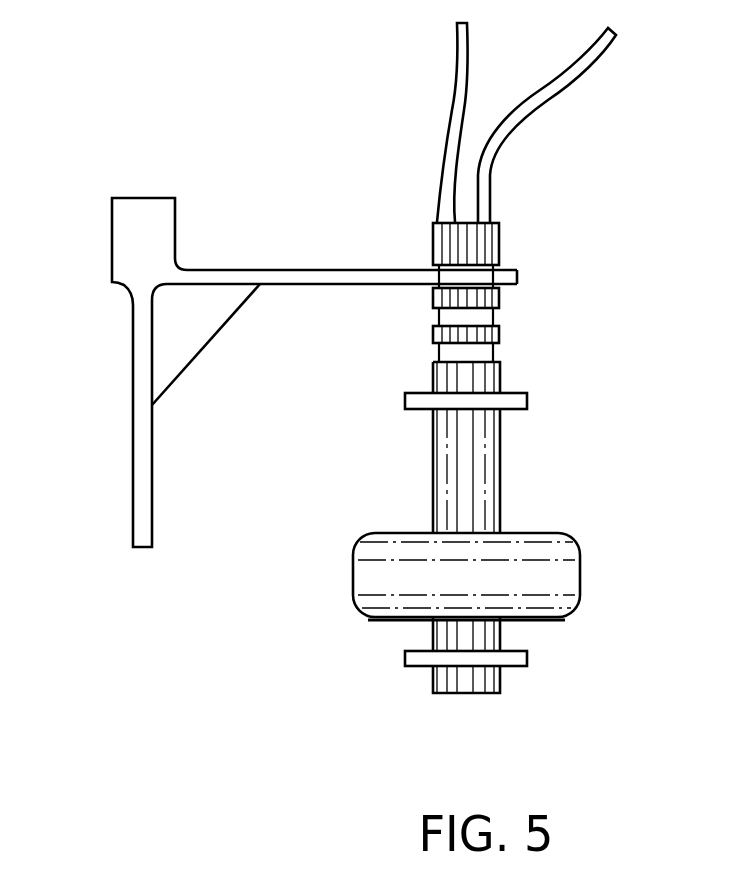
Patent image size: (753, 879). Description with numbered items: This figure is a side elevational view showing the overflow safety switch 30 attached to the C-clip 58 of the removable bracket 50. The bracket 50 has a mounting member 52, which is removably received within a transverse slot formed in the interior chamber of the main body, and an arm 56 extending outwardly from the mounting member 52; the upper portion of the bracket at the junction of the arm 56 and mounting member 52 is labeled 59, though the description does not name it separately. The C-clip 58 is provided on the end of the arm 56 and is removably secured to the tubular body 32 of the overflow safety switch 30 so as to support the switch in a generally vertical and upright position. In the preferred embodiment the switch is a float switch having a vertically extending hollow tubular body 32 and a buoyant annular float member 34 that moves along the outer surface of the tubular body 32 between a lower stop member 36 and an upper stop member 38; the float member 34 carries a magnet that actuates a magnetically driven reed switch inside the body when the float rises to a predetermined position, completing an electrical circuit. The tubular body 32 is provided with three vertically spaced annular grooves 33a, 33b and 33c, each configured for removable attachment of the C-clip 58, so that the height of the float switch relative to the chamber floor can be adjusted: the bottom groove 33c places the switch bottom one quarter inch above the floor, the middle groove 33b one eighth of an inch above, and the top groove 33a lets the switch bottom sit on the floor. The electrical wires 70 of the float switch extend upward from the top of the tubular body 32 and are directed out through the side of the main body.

The overflow safety switch 30 is at (497, 358).
The tubular body 32 is at (433, 458).
The top annular groove 33a is at (499, 265).
The middle annular groove 33b is at (433, 320).
The bottom annular groove 33c is at (433, 348).
The annular float member 34 is at (580, 548).
The lower stop member 36 is at (527, 655).
The upper stop member 38 is at (527, 401).
The bracket 50 is at (319, 315).
The mounting member 52 is at (133, 462).
The arm 56 is at (342, 270).
The C-clip 58 is at (517, 277).
The bracket mounting block 59 is at (142, 198).
The electrical wires 70 is at (457, 52).